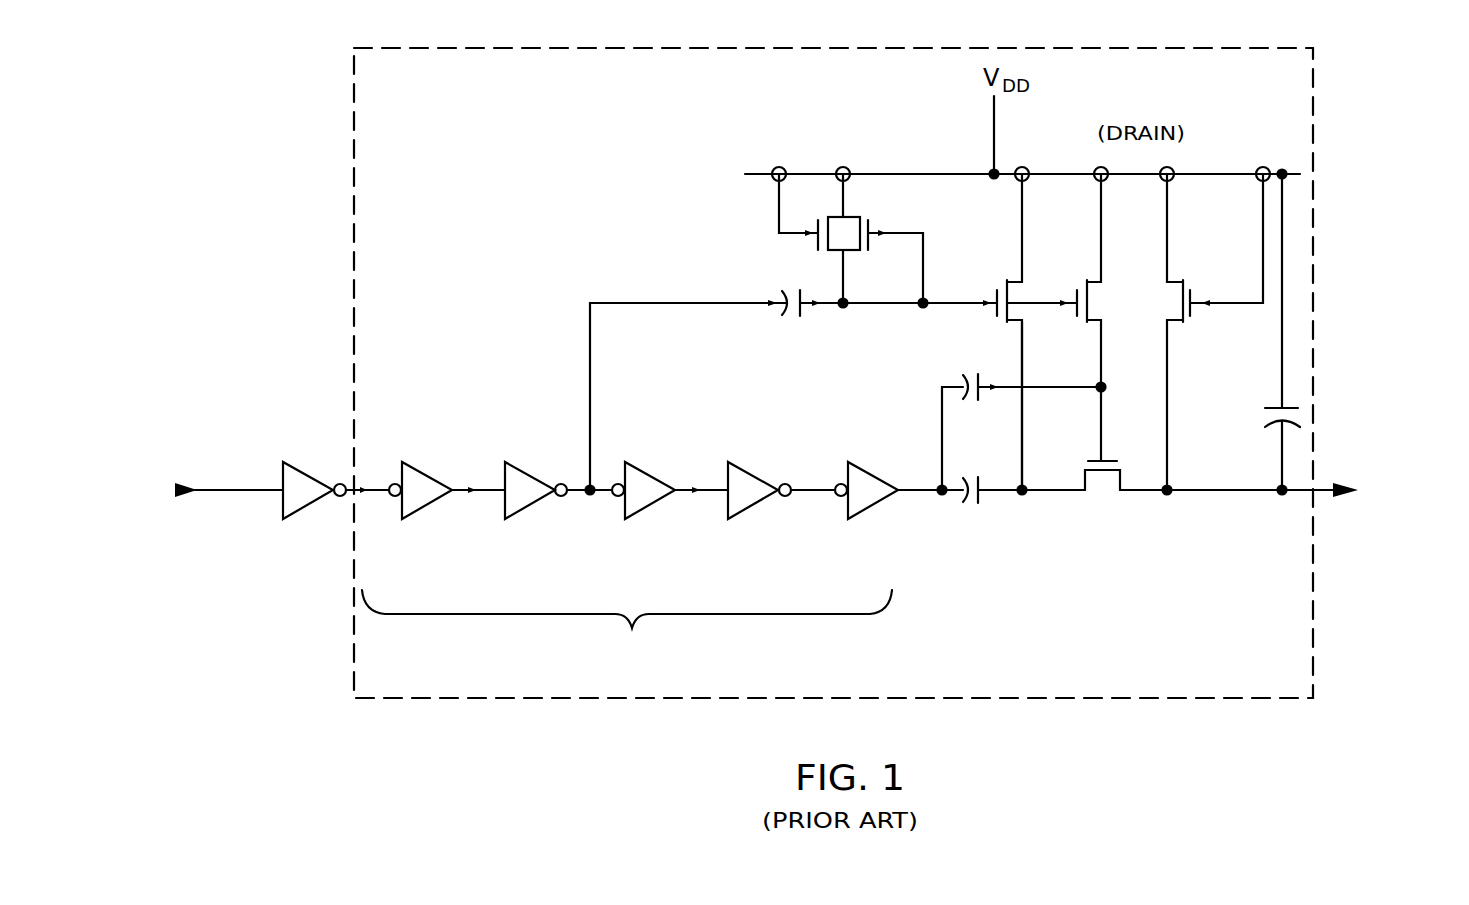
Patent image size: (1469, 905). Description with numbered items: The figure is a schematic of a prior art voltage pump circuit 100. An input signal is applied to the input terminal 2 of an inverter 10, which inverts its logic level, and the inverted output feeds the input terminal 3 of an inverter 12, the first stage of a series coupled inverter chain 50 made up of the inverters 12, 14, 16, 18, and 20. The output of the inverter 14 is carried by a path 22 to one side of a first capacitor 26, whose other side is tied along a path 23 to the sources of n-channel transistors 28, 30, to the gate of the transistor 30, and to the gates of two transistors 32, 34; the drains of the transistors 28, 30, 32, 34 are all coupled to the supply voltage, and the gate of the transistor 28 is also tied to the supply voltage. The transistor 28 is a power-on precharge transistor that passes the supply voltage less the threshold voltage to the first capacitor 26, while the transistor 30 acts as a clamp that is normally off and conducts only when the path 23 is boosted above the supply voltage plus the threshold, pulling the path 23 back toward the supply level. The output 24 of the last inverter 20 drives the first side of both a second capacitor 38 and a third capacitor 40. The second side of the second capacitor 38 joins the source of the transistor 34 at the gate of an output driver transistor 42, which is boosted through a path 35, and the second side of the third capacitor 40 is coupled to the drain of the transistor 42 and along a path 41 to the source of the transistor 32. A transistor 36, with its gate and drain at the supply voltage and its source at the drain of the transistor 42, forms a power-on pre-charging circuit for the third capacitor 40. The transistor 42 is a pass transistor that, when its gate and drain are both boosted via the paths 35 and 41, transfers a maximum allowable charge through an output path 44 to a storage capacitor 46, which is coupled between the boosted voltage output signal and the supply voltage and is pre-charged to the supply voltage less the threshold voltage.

The voltage pump circuit 100 is at (338, 193).
The input terminal 2 is at (233, 489).
The input terminal 3 is at (372, 489).
The inverter 10 is at (291, 521).
The inverter 12 is at (425, 507).
The inverter 14 is at (523, 507).
The inverter 16 is at (645, 507).
The inverter 18 is at (740, 507).
The inverter 20 is at (855, 507).
The path 22 is at (590, 331).
The path 23 is at (923, 232).
The output 24 is at (928, 495).
The first capacitor 26 is at (786, 298).
The n-channel transistor 28 is at (790, 243).
The transistor 30 is at (869, 223).
The transistor 32 is at (993, 298).
The transistor 34 is at (1085, 285).
The path 35 is at (1101, 358).
The transistor 36 is at (1200, 313).
The second capacitor 38 is at (968, 373).
The third capacitor 40 is at (983, 501).
The path 41 is at (1024, 400).
The output driver transistor 42 is at (1120, 482).
The output path 44 is at (1233, 492).
The storage capacitor 46 is at (1278, 407).
The inverter chain 50 is at (630, 563).